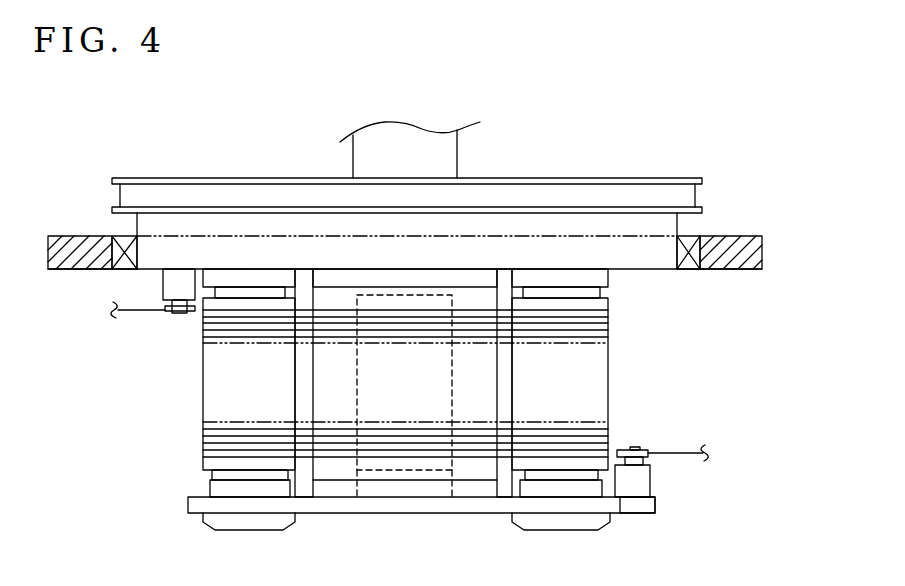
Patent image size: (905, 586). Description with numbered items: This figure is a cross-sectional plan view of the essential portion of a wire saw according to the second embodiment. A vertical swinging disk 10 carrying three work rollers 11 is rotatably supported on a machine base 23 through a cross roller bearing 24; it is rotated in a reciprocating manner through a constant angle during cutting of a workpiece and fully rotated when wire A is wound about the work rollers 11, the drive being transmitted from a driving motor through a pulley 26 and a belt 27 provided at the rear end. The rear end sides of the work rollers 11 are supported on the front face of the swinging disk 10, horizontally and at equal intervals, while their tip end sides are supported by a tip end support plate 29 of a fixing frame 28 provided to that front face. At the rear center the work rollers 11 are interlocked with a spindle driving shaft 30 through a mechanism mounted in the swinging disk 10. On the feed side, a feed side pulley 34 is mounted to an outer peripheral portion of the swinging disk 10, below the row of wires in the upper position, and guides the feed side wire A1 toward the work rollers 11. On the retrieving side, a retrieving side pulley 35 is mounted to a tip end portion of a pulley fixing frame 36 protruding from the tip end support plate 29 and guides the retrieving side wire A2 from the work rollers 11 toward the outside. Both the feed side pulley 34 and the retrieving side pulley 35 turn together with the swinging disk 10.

The swinging disk 10 is at (235, 225).
The work rollers 11 is at (377, 383).
The machine base 23 is at (762, 251).
The cross roller bearing 24 is at (690, 238).
The pulley 26 is at (620, 178).
The belt 27 is at (548, 192).
The fixing frame 28 is at (463, 492).
The tip end support plate 29 is at (348, 512).
The spindle driving shaft 30 is at (418, 150).
The feed side pulley 34 is at (168, 316).
The retrieving side pulley 35 is at (644, 449).
The pulley fixing frame 36 is at (642, 506).
The wire A is at (213, 443).
The feed side wire A1 is at (136, 312).
The retrieving side wire A2 is at (692, 459).